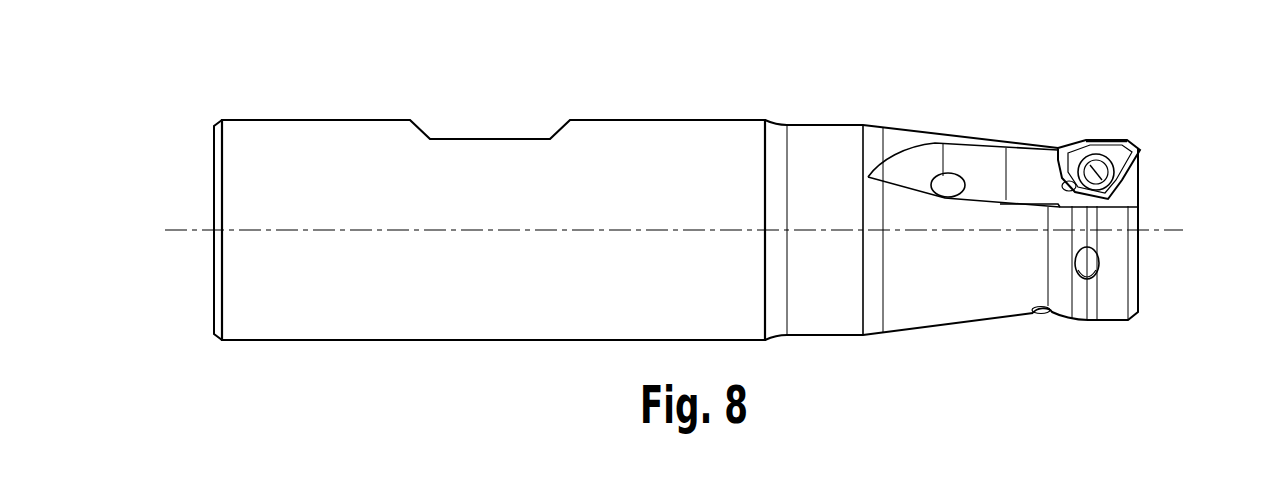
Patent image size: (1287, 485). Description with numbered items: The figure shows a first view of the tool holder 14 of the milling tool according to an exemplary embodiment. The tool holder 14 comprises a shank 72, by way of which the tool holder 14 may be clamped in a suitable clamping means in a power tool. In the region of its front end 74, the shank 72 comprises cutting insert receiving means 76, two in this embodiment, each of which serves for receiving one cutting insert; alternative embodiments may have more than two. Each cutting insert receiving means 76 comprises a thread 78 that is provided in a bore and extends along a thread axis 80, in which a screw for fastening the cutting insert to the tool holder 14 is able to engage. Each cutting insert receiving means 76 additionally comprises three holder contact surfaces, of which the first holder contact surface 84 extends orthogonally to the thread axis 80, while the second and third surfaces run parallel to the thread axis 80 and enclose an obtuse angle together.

The tool holder 14 is at (978, 103).
The shank 72 is at (667, 153).
The front end 74 is at (1240, 270).
The cutting insert receiving means 76 is at (1138, 125).
The thread 78 is at (1097, 168).
The thread axis 80 is at (1110, 136).
The first holder contact surface 84 is at (1073, 158).